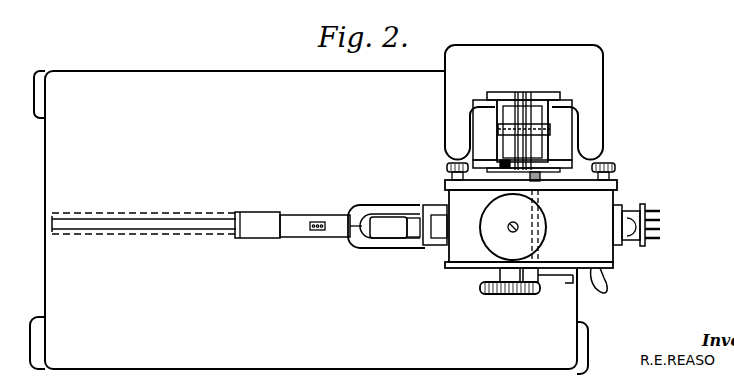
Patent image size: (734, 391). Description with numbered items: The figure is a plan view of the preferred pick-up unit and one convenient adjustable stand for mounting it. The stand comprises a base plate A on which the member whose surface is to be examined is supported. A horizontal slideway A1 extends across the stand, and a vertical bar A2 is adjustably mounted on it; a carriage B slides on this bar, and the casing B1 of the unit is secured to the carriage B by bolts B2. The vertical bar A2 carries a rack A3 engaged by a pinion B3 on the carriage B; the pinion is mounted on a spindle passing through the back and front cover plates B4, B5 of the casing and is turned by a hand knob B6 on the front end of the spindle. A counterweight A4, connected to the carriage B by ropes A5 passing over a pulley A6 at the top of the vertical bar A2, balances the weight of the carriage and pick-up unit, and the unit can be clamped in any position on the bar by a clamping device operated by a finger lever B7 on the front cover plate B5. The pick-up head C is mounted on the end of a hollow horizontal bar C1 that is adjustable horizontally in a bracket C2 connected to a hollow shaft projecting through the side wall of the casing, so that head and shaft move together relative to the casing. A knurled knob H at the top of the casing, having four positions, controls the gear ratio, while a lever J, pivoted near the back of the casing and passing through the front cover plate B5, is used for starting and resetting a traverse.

The base plate A is at (309, 222).
The horizontal slideway A1 is at (190, 226).
The vertical bar A2 is at (548, 117).
The rack A3 is at (474, 164).
The counterweight A4 is at (596, 60).
The ropes A5 is at (521, 160).
The pulley A6 is at (530, 150).
The carriage B is at (568, 181).
The casing B1 is at (595, 249).
The bolts B2 is at (643, 168).
The pinion B3 is at (503, 158).
The back cover plate B4 is at (446, 185).
The front cover plate B5 is at (446, 267).
The hand knob B6 is at (541, 289).
The finger lever B7 is at (575, 284).
The pick-up head C is at (258, 225).
The hollow horizontal bar C1 is at (296, 229).
The bracket C2 is at (397, 250).
The knurled knob H is at (550, 224).
The lever J is at (606, 281).